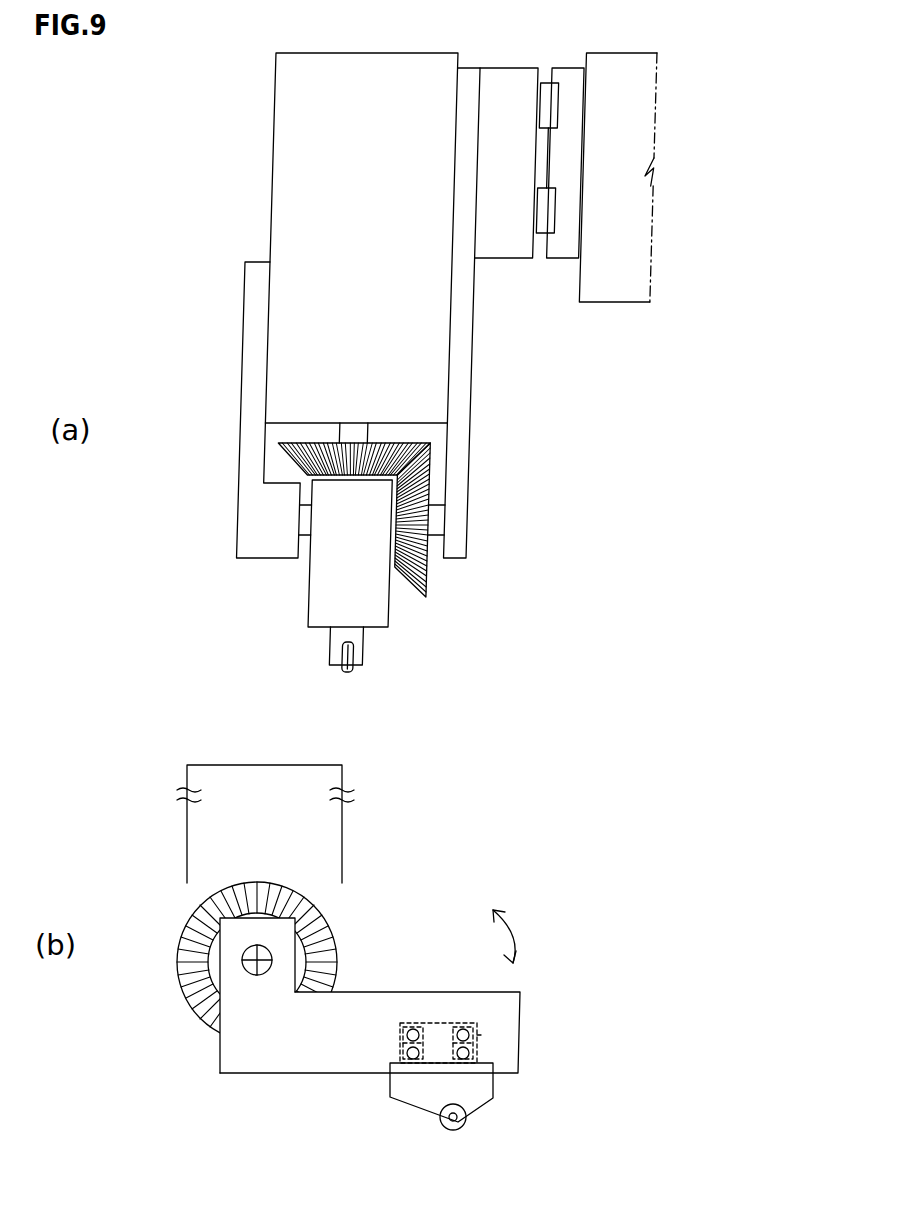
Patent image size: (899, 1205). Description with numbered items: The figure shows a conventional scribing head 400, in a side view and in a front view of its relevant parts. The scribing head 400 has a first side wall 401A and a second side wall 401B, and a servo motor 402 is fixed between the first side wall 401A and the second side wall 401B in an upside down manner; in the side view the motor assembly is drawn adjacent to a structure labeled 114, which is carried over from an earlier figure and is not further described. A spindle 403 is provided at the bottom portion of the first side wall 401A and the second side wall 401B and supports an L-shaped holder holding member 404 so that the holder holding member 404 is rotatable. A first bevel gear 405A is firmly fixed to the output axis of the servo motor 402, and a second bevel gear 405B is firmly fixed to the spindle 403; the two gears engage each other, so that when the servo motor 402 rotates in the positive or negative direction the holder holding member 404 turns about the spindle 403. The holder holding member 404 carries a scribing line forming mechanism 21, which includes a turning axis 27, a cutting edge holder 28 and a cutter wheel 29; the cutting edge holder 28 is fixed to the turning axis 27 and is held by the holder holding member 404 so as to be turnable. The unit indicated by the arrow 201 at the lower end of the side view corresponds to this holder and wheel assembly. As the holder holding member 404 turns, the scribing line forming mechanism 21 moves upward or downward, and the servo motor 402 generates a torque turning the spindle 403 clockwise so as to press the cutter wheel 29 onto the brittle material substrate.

The scribing head 400 is at (146, 92).
The servo motor 402 is at (293, 97).
The first side wall 401A is at (253, 350).
The second side wall 401B is at (474, 333).
The column / frame 114 is at (636, 88).
The first bevel gear 405A is at (413, 443).
The second bevel gear 405B is at (444, 483).
The spindle 403 is at (310, 528).
The holder holding member 404 is at (400, 612).
The tool unit 201 is at (397, 650).
The cutting edge holder 28 is at (343, 645).
The cutter wheel 29 is at (364, 672).
The scribing line forming mechanism 21 is at (380, 682).
The turning axis 27 is at (440, 1030).